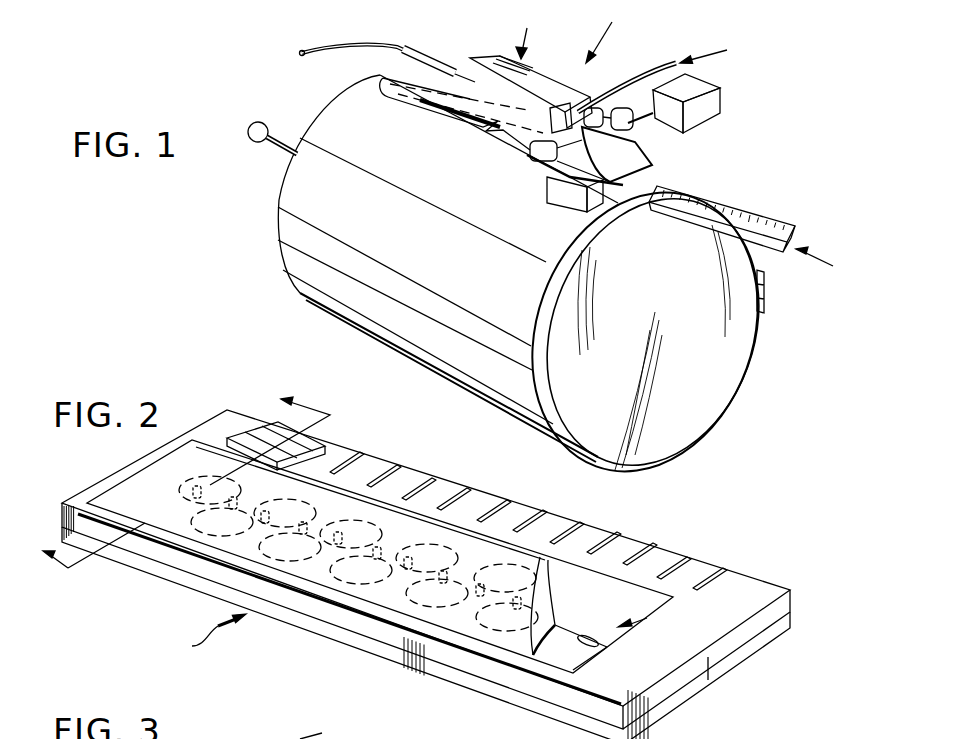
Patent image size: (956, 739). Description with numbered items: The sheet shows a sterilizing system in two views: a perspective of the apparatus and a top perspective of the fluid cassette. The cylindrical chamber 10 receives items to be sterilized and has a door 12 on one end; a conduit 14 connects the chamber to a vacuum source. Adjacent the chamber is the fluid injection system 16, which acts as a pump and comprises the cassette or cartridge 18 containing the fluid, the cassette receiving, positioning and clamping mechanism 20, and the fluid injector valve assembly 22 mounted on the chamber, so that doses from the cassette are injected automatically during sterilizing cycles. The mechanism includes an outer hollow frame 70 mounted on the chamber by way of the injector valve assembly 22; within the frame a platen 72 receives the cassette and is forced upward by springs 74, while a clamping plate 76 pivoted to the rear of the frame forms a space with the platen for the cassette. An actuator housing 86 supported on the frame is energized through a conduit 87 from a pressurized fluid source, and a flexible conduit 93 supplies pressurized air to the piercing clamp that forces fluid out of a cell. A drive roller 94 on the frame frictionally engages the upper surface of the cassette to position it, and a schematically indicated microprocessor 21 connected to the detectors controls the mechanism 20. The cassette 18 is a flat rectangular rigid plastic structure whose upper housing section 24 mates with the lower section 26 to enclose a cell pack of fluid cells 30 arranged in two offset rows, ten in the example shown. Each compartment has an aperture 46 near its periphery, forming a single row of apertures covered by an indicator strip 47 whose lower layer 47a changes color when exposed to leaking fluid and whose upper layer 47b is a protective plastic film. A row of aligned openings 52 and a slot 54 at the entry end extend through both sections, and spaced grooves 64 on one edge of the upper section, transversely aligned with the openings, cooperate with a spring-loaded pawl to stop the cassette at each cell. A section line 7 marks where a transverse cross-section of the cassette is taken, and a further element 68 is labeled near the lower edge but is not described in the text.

In FIG. 1, the cylindrical chamber 10 is at (439, 281).
In FIG. 1, the door 12 is at (733, 360).
In FIG. 1, the conduit 14 is at (280, 150).
In FIG. 1, the fluid injection system 16 is at (610, 31).
In FIG. 1, the cassette 18 is at (765, 222).
In FIG. 2, the cassette 18 is at (208, 638).
In FIG. 1, the cassette receiving, positioning and clamping mechanism 20 is at (530, 33).
In FIG. 1, the microprocessor 21 is at (703, 85).
In FIG. 1, the fluid injector valve assembly 22 is at (560, 218).
In FIG. 1, the outer hollow frame 70 is at (465, 133).
In FIG. 1, the platen 72 is at (635, 160).
In FIG. 1, the springs 74 is at (547, 178).
In FIG. 1, the clamping plate 76 is at (523, 102).
In FIG. 1, the actuator housing 86 is at (417, 48).
In FIG. 1, the conduit 87 is at (318, 32).
In FIG. 1, the flexible conduit 93 is at (620, 90).
In FIG. 1, the drive roller 94 is at (622, 131).
In FIG. 2, the section line 7- 7 is at (194, 491).
In FIG. 2, the upper housing section 24 is at (793, 592).
In FIG. 2, the lower section 26 is at (780, 633).
In FIG. 2, the fluid cells 30 is at (547, 600).
In FIG. 2, the aperture 46 is at (480, 587).
In FIG. 2, the indicator strip 47 is at (647, 618).
In FIG. 2, the lower layer 47a is at (581, 662).
In FIG. 2, the upper layer 47b is at (607, 649).
In FIG. 2, the openings 52 is at (627, 563).
In FIG. 2, the slot 54 is at (258, 442).
In FIG. 2, the grooves 64 is at (720, 568).
In FIG. 3, the grooves 64 is at (426, 728).
In FIG. 3, the guide 68 is at (313, 737).